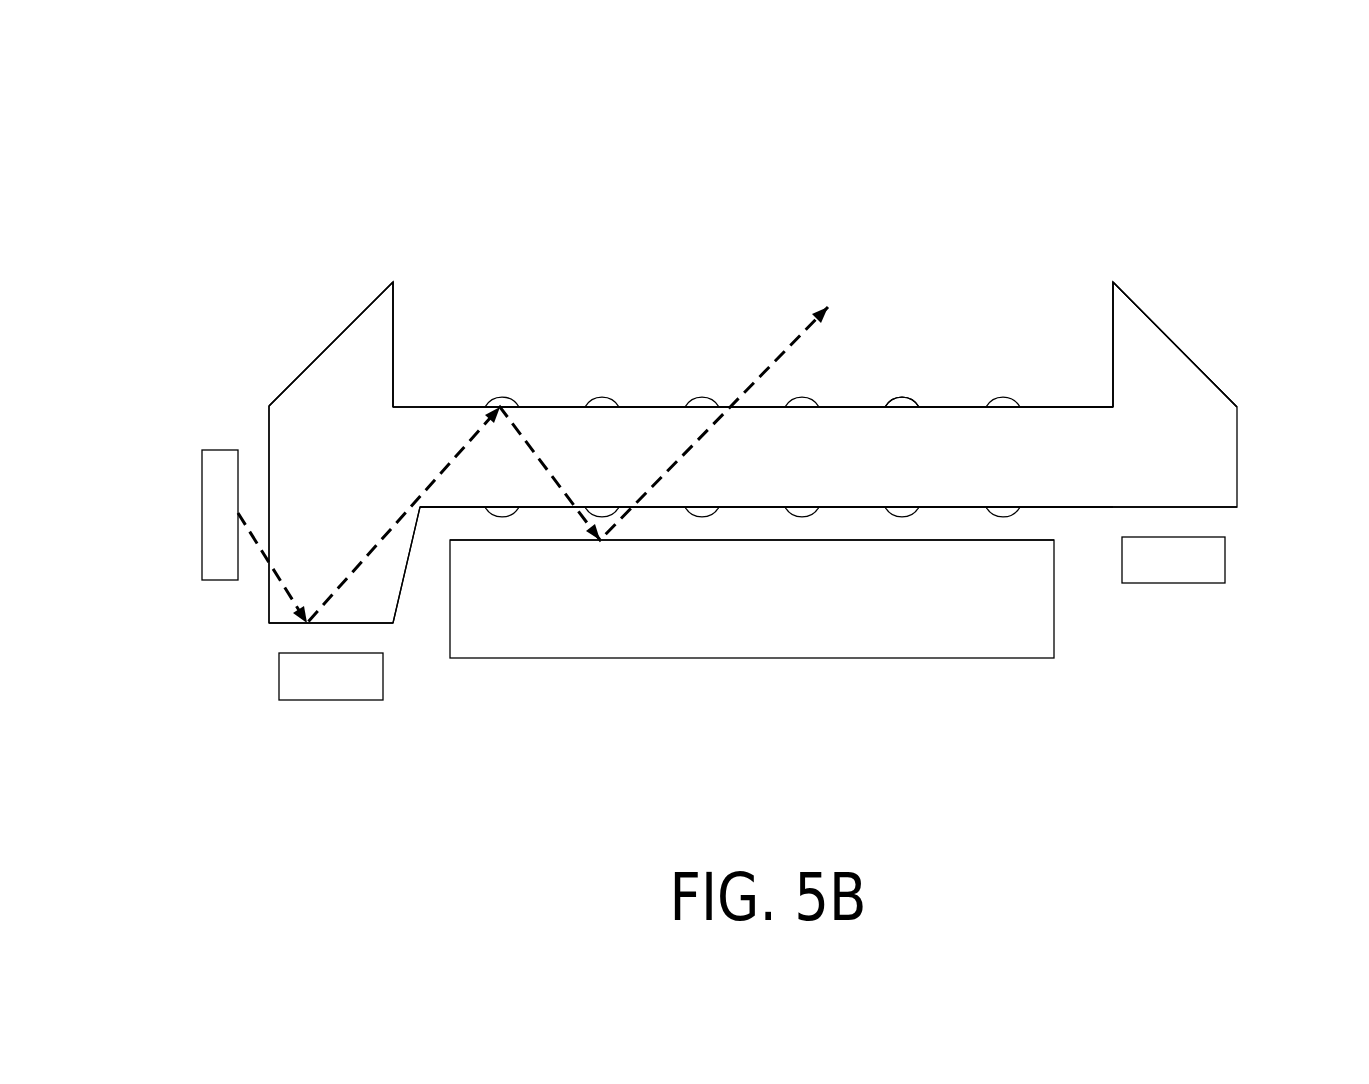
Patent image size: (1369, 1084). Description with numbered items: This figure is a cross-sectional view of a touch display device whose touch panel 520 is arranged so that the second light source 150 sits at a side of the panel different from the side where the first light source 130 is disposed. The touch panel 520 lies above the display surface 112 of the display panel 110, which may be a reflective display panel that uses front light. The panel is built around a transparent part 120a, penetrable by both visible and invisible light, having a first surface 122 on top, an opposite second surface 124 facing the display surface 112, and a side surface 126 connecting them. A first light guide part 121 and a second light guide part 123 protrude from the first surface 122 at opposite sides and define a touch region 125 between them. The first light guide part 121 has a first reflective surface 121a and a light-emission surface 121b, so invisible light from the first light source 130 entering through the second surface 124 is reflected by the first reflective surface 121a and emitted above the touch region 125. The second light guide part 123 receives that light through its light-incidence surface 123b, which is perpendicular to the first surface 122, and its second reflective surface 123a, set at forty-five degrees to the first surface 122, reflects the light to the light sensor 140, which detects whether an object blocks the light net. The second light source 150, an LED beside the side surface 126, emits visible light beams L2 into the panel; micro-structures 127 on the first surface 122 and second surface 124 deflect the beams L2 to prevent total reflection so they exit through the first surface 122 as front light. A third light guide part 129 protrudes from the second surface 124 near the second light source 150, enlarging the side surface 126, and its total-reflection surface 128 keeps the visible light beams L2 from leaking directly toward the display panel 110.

The touch panel 520 is at (315, 188).
The display panel 110 is at (1054, 632).
The display surface 112 is at (651, 526).
The transparent part 120a is at (998, 425).
The first light guide part 121 is at (367, 317).
The first reflective surface 121a is at (337, 356).
The light-emission surface 121b is at (405, 312).
The first surface 122 is at (556, 394).
The second light guide part 123 is at (1145, 325).
The second reflective surface 123a is at (1167, 354).
The light-incidence surface 123b is at (1098, 317).
The second surface 124 is at (965, 507).
The touch region 125 is at (741, 259).
The side surface 126 is at (258, 600).
The micro-structures 127 is at (902, 402).
The total-reflection surface 128 is at (400, 539).
The third light guide part 129 is at (330, 597).
The first light source 130 is at (1225, 560).
The light sensor 140 is at (279, 675).
The second light source 150 is at (202, 470).
The visible light beams L2 is at (770, 362).